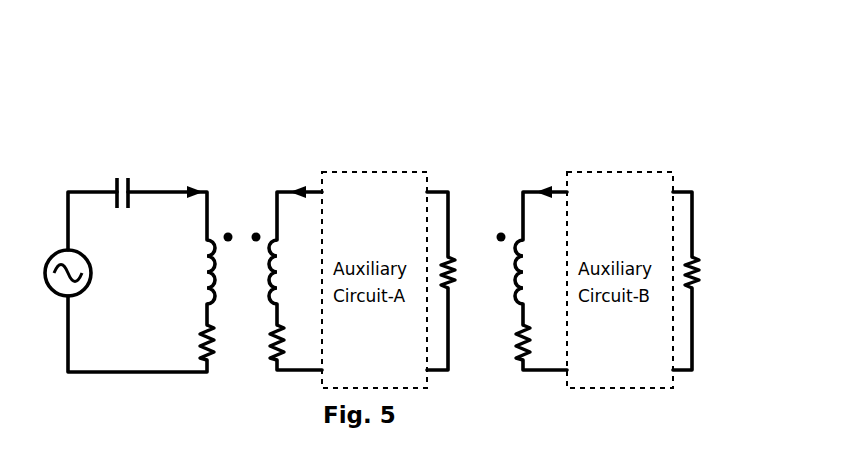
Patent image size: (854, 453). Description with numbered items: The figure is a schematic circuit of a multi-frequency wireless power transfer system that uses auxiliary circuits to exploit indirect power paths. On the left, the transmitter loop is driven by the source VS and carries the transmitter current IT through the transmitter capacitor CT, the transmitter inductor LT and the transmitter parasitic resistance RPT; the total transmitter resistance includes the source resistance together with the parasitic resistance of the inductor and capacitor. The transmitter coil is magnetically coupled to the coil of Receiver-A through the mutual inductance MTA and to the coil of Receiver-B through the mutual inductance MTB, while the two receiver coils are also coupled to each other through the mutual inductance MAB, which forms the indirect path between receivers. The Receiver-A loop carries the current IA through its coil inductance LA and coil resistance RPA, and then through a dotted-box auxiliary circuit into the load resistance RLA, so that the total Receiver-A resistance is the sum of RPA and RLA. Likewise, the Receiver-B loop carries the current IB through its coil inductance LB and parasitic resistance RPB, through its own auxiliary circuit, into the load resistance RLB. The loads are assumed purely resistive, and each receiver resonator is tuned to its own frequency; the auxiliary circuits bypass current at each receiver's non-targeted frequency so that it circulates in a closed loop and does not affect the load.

The source VS is at (55, 273).
The transmitter capacitor CT is at (123, 179).
The transmitter loop current IT is at (136, 168).
The Receiver-A loop current IA is at (295, 168).
The Receiver-B loop current IB is at (541, 168).
The transmitter inductor LT is at (191, 272).
The transmitter parasitic resistance RPT is at (185, 342).
The Receiver-A coil inductance LA is at (289, 272).
The Receiver-A parasitic resistance RPA is at (257, 342).
The Receiver-A load resistance RLA is at (466, 272).
The Receiver-B coil inductance LB is at (535, 272).
The Receiver-B parasitic resistance RPB is at (503, 342).
The Receiver-B load resistance RLB is at (709, 272).
The mutual inductance between transmitter and Receiver-B MTB is at (498, 90).
The mutual inductance between transmitter and Receiver-A MTA is at (275, 143).
The mutual inductance between Receiver-A and Receiver-B MAB is at (498, 143).